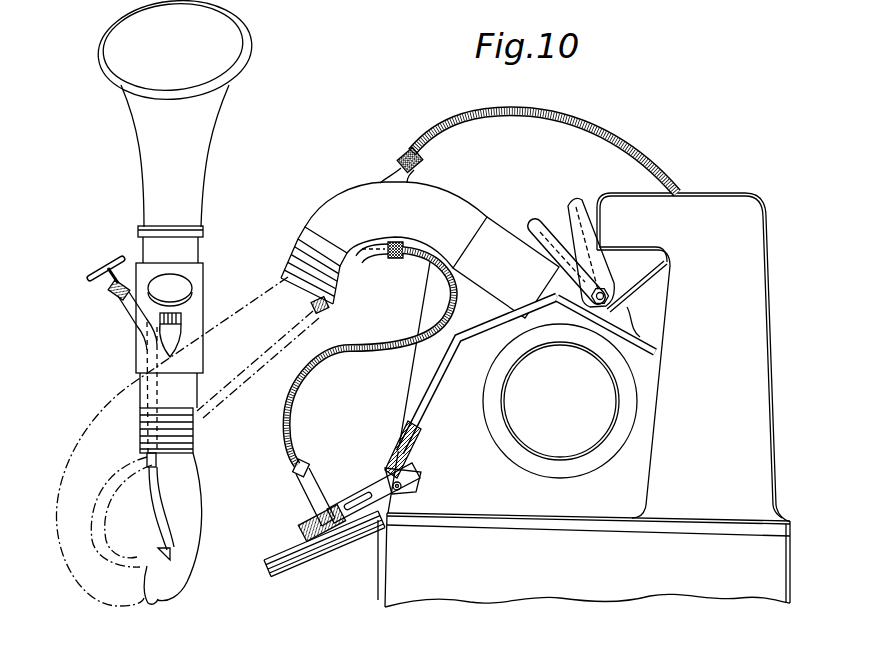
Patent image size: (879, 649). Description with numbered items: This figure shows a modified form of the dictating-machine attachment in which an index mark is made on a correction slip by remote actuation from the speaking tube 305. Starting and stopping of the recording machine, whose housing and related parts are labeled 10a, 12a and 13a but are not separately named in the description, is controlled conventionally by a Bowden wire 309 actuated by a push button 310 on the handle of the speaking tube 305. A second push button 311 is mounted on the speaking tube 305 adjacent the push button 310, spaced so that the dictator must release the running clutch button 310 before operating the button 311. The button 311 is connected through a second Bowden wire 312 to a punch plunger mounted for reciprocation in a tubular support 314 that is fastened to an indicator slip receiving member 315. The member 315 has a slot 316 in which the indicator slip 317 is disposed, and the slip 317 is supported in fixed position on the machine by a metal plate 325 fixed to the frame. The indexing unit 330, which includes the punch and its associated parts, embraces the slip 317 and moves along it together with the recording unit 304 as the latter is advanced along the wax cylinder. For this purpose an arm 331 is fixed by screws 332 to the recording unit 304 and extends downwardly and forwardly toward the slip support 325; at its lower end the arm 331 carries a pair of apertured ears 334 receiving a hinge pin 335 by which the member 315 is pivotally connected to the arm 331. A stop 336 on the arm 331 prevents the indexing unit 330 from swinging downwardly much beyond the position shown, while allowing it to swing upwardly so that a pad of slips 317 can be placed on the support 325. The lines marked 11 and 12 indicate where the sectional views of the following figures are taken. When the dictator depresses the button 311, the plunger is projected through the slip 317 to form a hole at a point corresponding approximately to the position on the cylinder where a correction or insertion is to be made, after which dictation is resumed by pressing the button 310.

The appliance housing 10a is at (730, 190).
The ring 13a is at (594, 463).
The opening 12a is at (563, 455).
The speaking tube 305 is at (140, 384).
The push button 310 is at (185, 290).
The second push button 311 is at (113, 262).
The recording unit 304 is at (497, 206).
The Bowden wire 309 is at (457, 115).
The second Bowden wire 312 is at (320, 312).
The screws 332 is at (567, 223).
The arm 331 is at (434, 378).
The ears 334 is at (410, 458).
The stop means 336 is at (418, 466).
The indicator slip receiving member 315 is at (382, 488).
The hinge pin 335 is at (401, 490).
The indexing unit 330 is at (292, 481).
The tubular support 314 is at (315, 488).
The slot 316 is at (298, 540).
The indicator slip 317 is at (273, 545).
The metal plate 325 is at (298, 566).
The section line 11 is at (270, 539).
The mandrel 12 is at (285, 410).